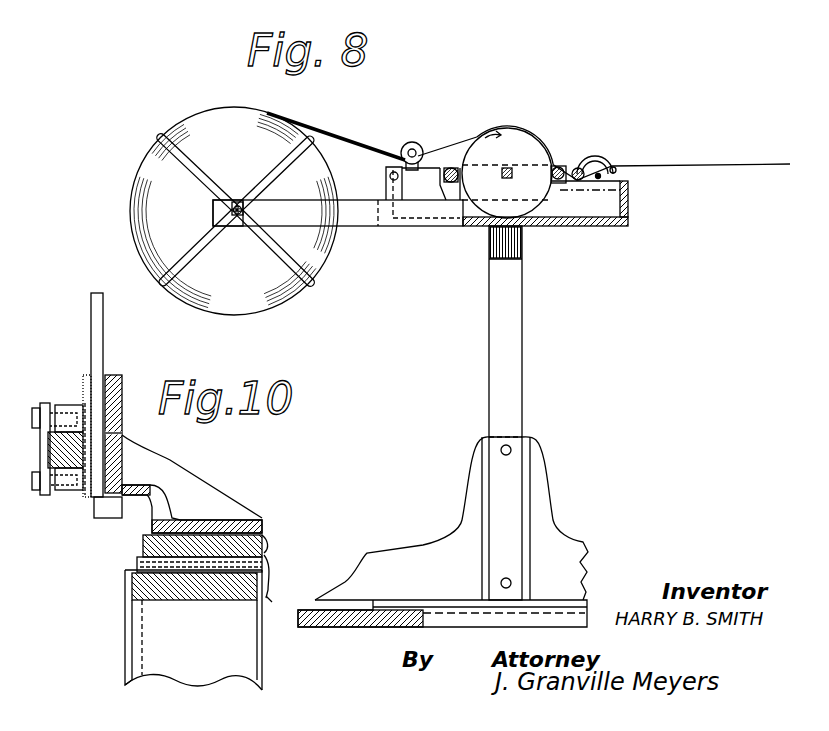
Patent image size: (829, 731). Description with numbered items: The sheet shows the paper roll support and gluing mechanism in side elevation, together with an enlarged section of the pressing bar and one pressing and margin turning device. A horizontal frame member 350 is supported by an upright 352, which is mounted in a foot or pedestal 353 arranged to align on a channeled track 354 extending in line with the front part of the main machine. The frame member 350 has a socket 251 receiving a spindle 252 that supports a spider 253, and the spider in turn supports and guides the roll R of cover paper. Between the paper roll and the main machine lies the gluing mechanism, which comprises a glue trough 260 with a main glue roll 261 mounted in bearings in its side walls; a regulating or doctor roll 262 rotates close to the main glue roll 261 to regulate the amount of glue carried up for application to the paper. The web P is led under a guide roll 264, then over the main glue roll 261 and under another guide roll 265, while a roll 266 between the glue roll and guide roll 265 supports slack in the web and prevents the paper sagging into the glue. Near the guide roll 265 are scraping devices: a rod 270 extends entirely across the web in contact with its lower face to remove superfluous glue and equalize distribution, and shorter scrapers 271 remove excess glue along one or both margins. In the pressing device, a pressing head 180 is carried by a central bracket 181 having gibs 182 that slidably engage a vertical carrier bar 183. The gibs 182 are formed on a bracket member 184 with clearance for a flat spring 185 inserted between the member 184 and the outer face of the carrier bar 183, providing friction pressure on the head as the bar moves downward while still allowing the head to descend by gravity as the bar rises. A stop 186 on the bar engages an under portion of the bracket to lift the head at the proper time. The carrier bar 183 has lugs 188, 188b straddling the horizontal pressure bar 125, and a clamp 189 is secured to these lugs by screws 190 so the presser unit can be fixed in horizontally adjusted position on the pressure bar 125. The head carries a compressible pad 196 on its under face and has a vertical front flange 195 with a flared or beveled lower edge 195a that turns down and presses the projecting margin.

In FIG. 8, the roll of cover paper R is at (218, 211).
In FIG. 8, the web P is at (358, 147).
In FIG. 8, the spider 253 is at (175, 135).
In FIG. 8, the spindle 252 is at (240, 203).
In FIG. 8, the sockets 251 is at (222, 215).
In FIG. 8, the horizontal frame member 350 is at (358, 226).
In FIG. 8, the guide roll 264 is at (413, 141).
In FIG. 8, the regulating roll 262 is at (453, 166).
In FIG. 8, the main glue roll 261 is at (520, 143).
In FIG. 8, the glue trough 260 is at (628, 183).
In FIG. 8, the slack supporting roll 266 is at (558, 184).
In FIG. 8, the guide roll 265 is at (584, 165).
In FIG. 8, the rod 270 is at (602, 172).
In FIG. 8, the scrapers 271 is at (616, 168).
In FIG. 8, the upright 352 is at (518, 396).
In FIG. 8, the pedestal 353 is at (548, 520).
In FIG. 8, the channeled track 354 is at (580, 614).
In FIG. 10, the carrier bar 183 is at (103, 318).
In FIG. 10, the stop 186 is at (112, 508).
In FIG. 10, the gibs 182 is at (87, 378).
In FIG. 10, the flat spring 185 is at (110, 378).
In FIG. 10, the bracket member 184 is at (122, 388).
In FIG. 10, the central bracket 181 is at (198, 520).
In FIG. 10, the pressing head 180 is at (262, 540).
In FIG. 10, the compressible pad 196 is at (266, 552).
In FIG. 10, the front flange 195 is at (268, 592).
In FIG. 10, the beveled lower edge 195a is at (270, 576).
In FIG. 10, the clamp 189 is at (45, 412).
In FIG. 10, the screws 190 is at (33, 410).
In FIG. 10, the lugs 188 is at (77, 405).
In FIG. 10, the lugs 188b is at (73, 490).
In FIG. 10, the pressure bar 125 is at (62, 455).